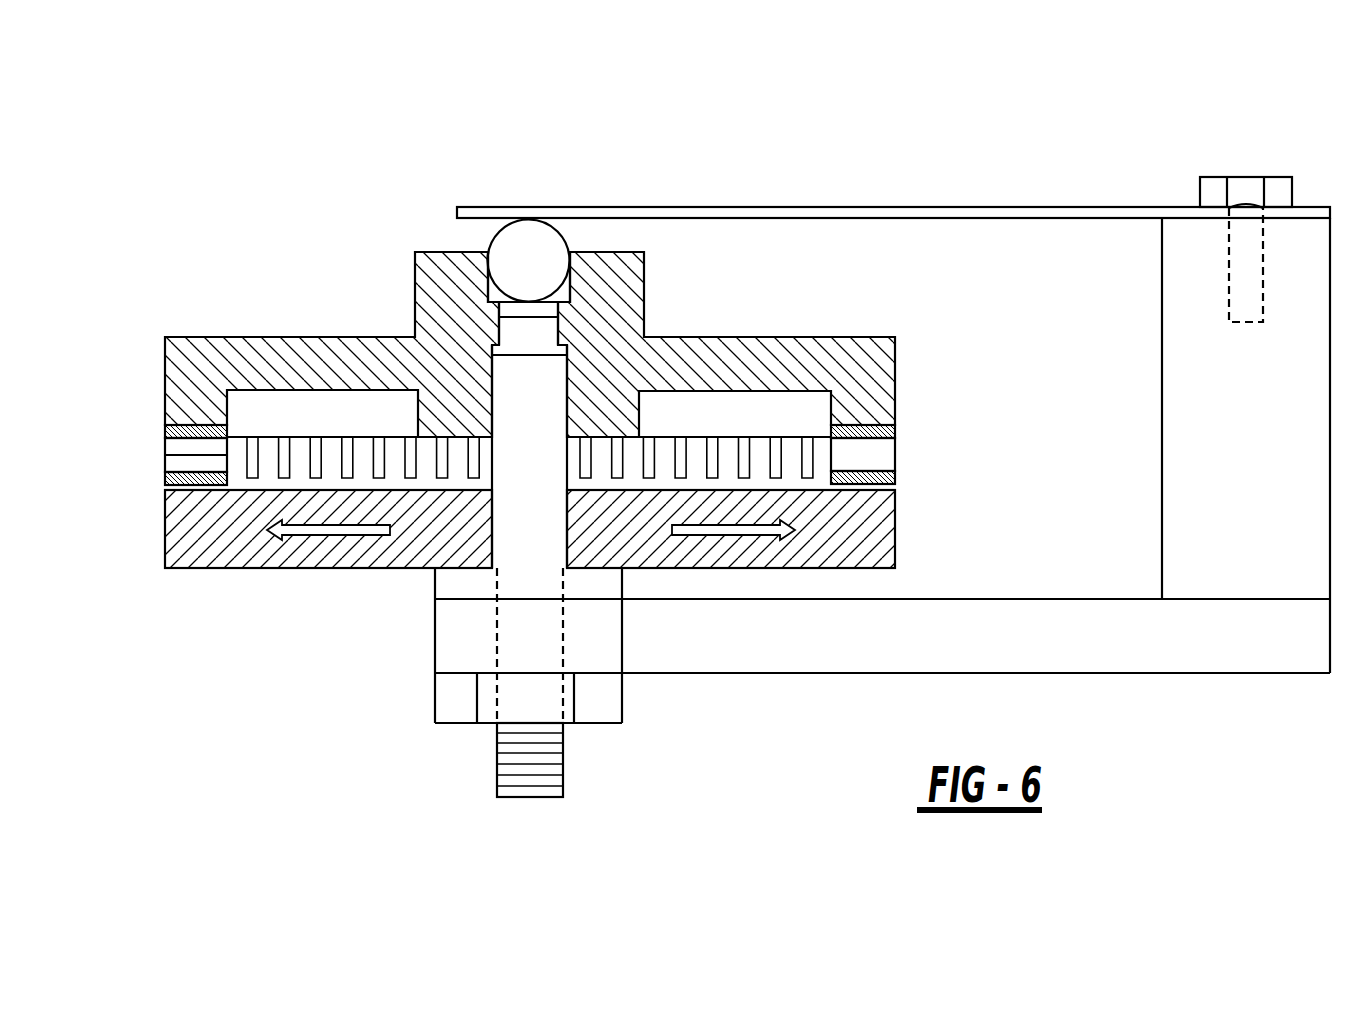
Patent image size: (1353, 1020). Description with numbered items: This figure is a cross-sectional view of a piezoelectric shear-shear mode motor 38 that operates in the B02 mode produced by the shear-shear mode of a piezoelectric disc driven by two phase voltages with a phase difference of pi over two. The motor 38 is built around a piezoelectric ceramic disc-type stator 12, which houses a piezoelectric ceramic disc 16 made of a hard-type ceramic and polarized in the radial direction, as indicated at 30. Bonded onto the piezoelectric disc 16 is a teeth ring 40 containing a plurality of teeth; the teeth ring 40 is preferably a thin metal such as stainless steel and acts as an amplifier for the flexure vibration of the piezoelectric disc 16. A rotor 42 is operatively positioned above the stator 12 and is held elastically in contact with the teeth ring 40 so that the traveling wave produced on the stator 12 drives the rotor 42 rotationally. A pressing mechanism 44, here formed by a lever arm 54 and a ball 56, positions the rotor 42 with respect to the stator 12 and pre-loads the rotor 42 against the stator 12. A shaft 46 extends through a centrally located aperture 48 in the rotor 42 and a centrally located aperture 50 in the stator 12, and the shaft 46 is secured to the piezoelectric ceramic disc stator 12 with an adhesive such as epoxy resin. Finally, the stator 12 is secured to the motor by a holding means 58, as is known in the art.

The traveling wave composite stator 12 is at (138, 492).
The piezoelectric ceramic disc 16 is at (165, 530).
The radial polarization direction 30 is at (313, 538).
The piezoelectric shear-shear mode motor 38 is at (1096, 95).
The teeth ring 40 is at (165, 456).
The rotor 42 is at (246, 337).
The pressing mechanism 44 is at (599, 200).
The shaft 46 is at (492, 529).
The centrally located aperture of the rotor 48 is at (566, 383).
The centrally located aperture of the stator 50 is at (567, 537).
The lever arm 54 is at (918, 207).
The ball 56 is at (490, 238).
The holding means 58 is at (1222, 673).